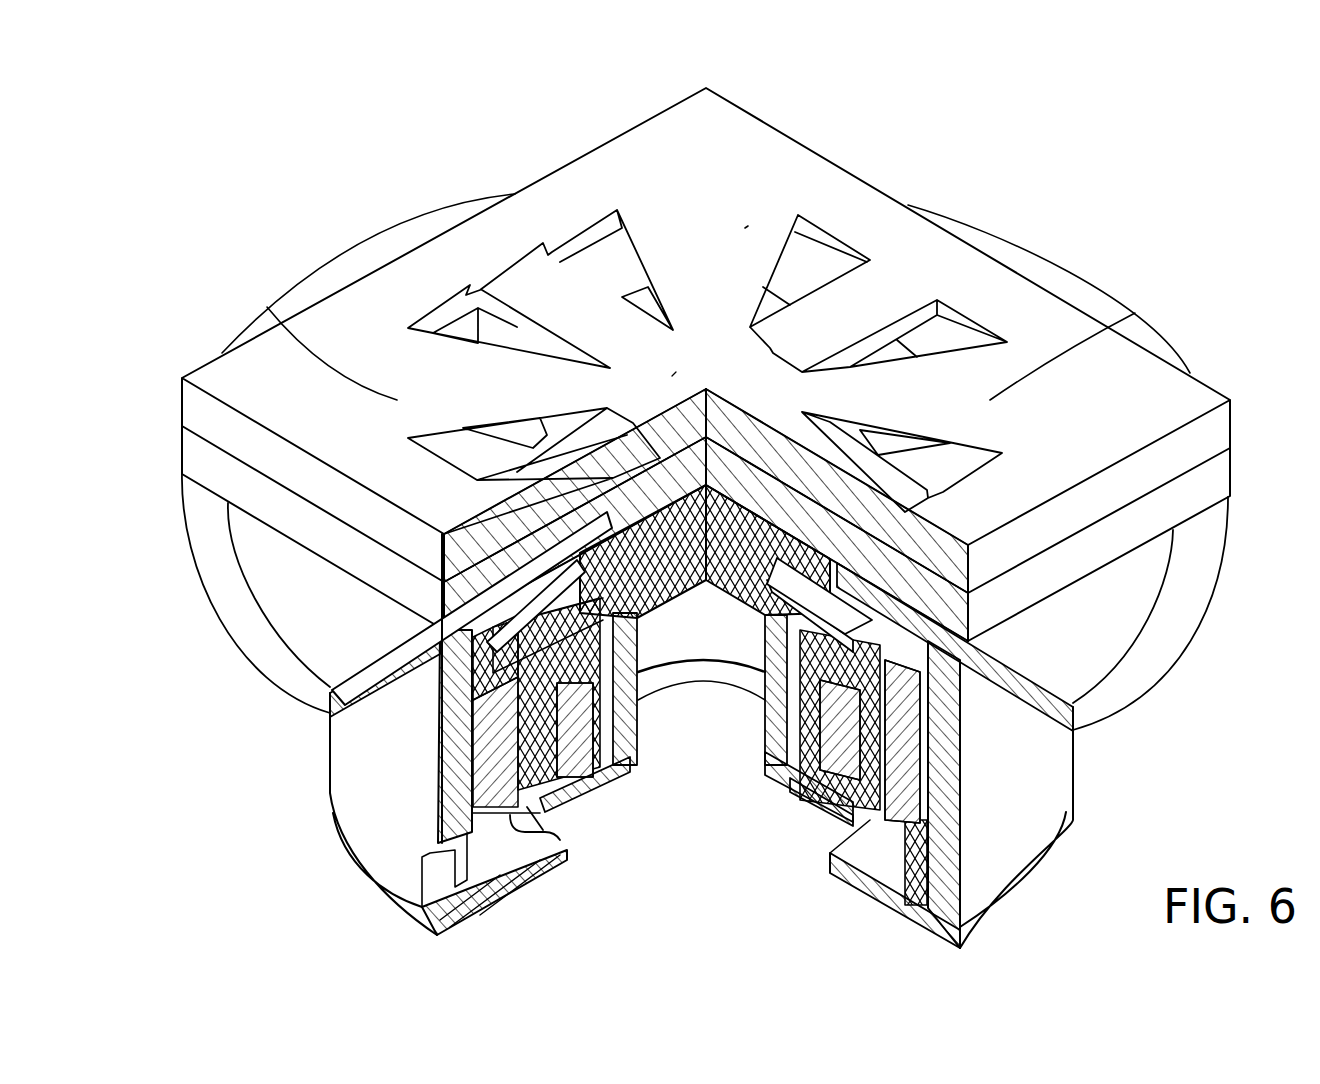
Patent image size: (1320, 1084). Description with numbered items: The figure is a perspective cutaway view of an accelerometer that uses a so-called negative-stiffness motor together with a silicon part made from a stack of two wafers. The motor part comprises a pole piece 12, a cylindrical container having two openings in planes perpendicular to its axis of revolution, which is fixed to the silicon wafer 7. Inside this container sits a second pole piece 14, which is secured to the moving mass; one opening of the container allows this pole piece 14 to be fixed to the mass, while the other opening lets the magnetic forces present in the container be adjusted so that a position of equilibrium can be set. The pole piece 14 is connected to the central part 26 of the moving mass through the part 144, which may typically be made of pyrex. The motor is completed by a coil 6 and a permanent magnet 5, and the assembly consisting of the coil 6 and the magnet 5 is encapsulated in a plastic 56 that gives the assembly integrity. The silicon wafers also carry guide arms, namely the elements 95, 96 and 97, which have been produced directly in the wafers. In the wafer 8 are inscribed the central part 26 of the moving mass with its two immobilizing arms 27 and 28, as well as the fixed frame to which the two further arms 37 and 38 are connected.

The permanent magnet 5 is at (438, 772).
The coil 6 is at (790, 787).
The silicon wafer 7 is at (1203, 488).
The wafer 8 is at (1200, 442).
The pole piece 12 is at (533, 880).
The pole piece 14 is at (820, 798).
The central part 26 is at (672, 376).
The immobilizing arm 27 is at (570, 298).
The immobilizing arm 28 is at (813, 443).
The arm 37 is at (488, 488).
The arm 38 is at (873, 290).
The plastic 56 is at (560, 840).
The guide arm 95 is at (1135, 314).
The guide arm 96 is at (745, 228).
The guide arm 97 is at (267, 308).
The part 144 is at (438, 698).